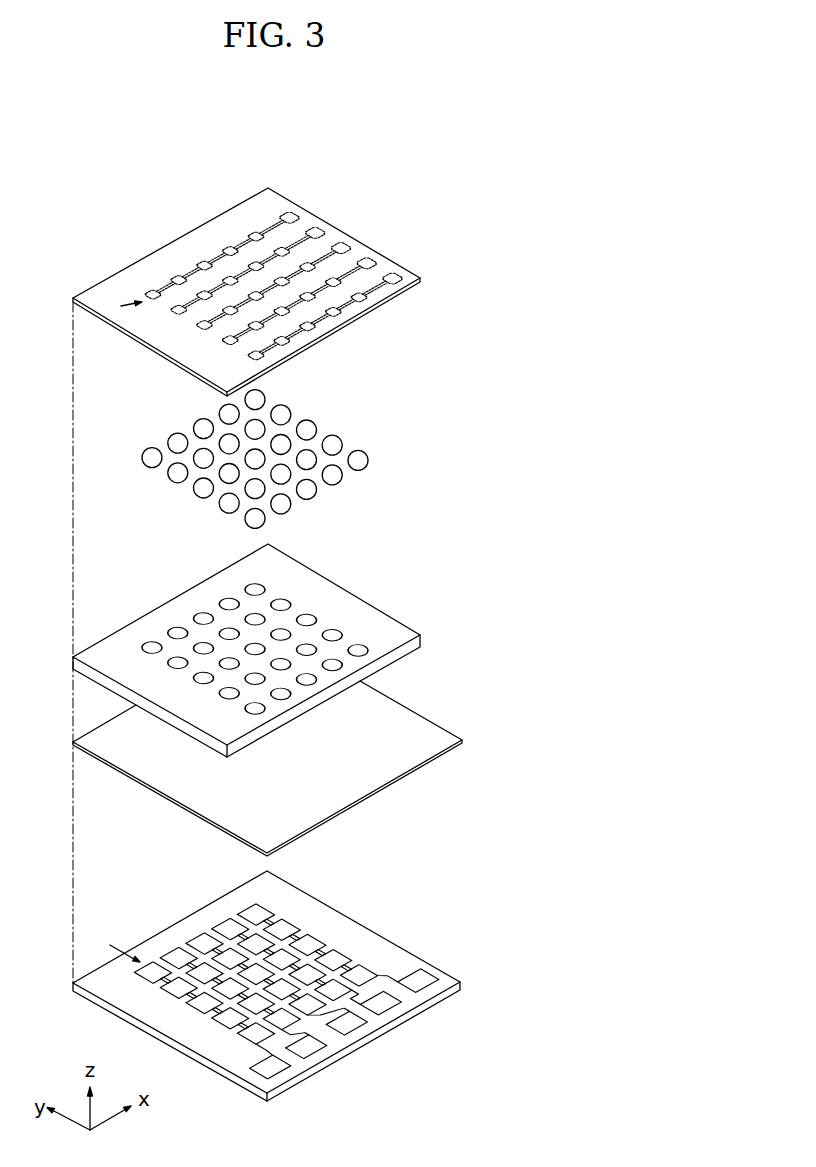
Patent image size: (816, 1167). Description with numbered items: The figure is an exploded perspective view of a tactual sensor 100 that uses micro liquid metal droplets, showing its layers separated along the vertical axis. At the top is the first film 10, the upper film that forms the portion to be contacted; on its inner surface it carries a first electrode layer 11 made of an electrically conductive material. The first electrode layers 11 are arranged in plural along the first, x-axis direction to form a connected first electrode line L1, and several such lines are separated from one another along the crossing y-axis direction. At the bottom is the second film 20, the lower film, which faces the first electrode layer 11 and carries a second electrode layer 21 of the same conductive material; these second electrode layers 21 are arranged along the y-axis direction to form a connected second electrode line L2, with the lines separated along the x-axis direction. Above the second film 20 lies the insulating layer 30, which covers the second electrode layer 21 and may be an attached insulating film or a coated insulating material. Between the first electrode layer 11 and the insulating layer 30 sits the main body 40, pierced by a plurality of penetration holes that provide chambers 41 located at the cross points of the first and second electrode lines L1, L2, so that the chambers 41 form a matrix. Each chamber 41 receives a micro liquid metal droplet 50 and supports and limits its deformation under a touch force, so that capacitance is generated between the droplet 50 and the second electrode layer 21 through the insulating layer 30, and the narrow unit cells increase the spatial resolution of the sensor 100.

The tactual sensor 100 is at (264, 118).
The first film 10 is at (137, 272).
The first electrode layer 11 is at (190, 270).
The second film 20 is at (360, 930).
The second electrode layer 21 is at (218, 922).
The insulating layer 30 is at (383, 778).
The main body 40 is at (345, 603).
The chamber 41 is at (195, 618).
The micro liquid metal droplet 50 is at (341, 477).
The first electrode line L1 is at (119, 300).
The second electrode line L2 is at (111, 944).